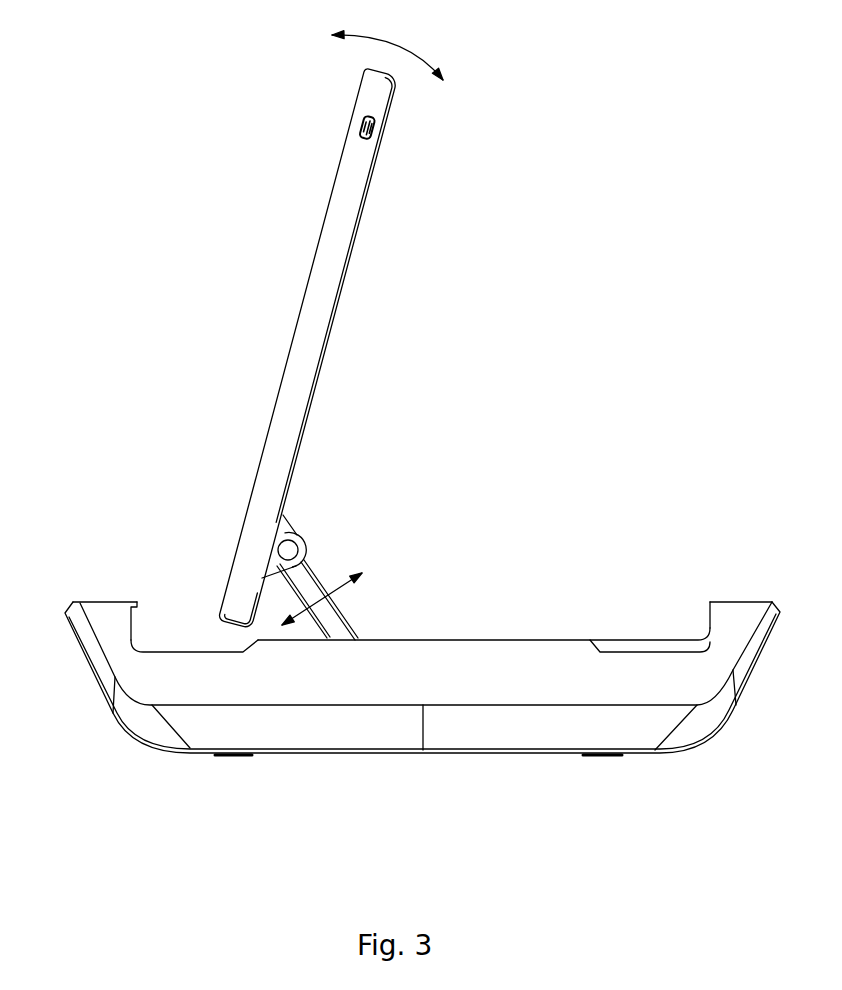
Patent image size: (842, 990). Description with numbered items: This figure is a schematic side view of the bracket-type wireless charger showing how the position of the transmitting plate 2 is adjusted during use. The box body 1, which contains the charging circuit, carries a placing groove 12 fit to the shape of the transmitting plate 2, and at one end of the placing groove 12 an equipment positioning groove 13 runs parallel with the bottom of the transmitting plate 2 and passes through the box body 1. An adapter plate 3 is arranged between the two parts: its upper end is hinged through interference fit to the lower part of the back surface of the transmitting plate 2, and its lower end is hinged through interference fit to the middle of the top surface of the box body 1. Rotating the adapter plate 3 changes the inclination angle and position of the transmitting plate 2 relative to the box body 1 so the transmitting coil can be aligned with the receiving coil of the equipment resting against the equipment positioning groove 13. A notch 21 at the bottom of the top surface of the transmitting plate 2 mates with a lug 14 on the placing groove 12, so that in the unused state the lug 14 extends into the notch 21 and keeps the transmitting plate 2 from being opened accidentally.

The box body 1 is at (422, 691).
The transmitting plate 2 is at (310, 350).
The adapter plate 3 is at (328, 617).
The placing groove 12 is at (537, 615).
The equipment positioning groove 13 is at (185, 643).
The lug 14 is at (138, 607).
The notch 21 is at (222, 623).